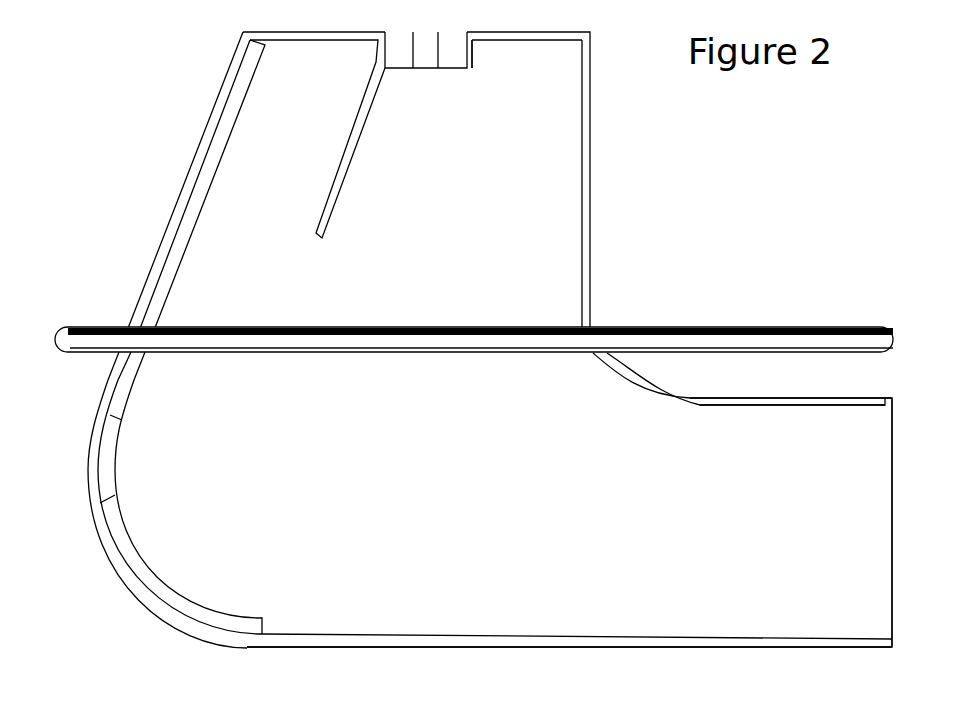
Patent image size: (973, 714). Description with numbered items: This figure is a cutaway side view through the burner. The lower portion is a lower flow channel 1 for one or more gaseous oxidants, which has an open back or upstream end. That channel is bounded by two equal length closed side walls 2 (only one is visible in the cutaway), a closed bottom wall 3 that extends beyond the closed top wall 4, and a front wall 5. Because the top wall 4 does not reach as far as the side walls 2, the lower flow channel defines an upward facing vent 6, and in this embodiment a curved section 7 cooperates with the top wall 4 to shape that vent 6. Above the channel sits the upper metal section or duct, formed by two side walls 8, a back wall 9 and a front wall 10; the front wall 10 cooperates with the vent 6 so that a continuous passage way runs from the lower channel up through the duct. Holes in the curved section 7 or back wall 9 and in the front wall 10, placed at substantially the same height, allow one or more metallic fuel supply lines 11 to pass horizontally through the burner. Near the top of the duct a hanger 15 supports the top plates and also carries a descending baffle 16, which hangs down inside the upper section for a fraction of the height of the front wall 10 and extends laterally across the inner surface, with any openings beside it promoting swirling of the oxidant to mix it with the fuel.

The lower flow channel 1 is at (569, 522).
The side walls 2 is at (892, 515).
The bottom wall 3 is at (569, 626).
The top wall 4 is at (777, 405).
The front wall 5 is at (102, 502).
The upward facing vent 6 is at (461, 119).
The curved section 7 is at (615, 382).
The side walls 8 is at (217, 500).
The back wall 9 is at (590, 102).
The front wall 10 is at (187, 230).
The metallic fuel supply lines 11 is at (474, 323).
The hanger 15 is at (373, 62).
The descending baffle 16 is at (345, 128).